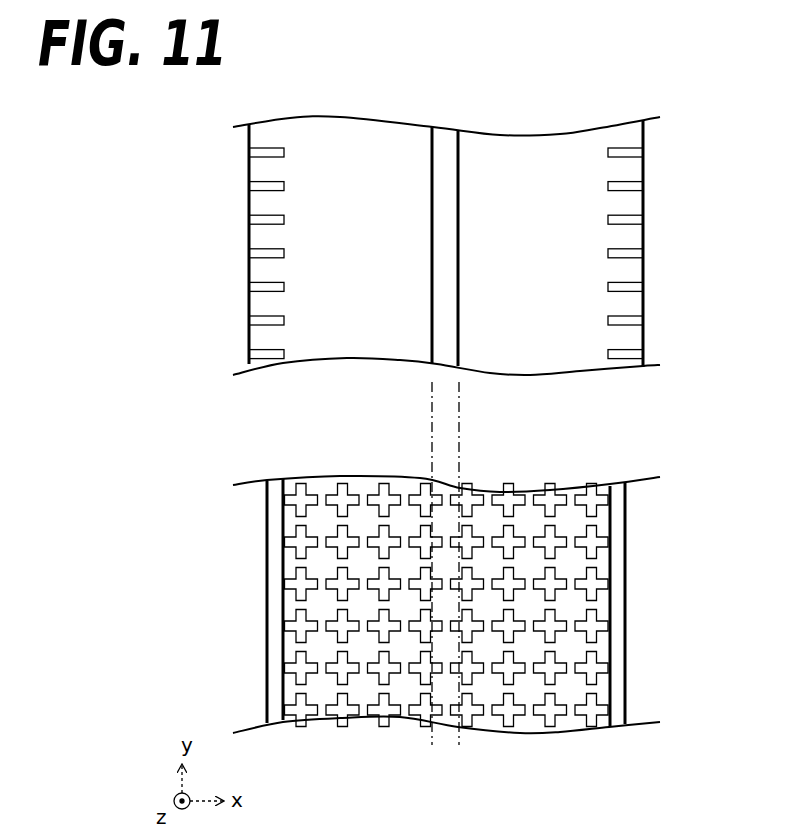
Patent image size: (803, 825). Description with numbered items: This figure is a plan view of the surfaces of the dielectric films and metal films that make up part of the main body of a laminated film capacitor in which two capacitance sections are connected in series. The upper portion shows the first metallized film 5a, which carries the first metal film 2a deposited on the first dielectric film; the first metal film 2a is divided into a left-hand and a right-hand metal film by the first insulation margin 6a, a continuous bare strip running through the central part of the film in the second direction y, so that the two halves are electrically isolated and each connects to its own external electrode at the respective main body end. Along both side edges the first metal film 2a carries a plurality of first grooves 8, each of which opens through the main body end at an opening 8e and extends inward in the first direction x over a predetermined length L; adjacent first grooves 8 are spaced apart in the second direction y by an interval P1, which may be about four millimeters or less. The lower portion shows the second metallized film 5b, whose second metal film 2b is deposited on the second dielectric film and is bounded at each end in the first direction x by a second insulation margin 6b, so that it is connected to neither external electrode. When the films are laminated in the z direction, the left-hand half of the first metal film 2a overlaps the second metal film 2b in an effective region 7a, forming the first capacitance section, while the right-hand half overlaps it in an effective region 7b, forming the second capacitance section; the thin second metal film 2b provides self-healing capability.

The first metallized film 5a is at (640, 97).
The first metal film 2a is at (368, 142).
The first insulation margin 6a is at (448, 147).
The first groove 8 is at (608, 220).
The opening 8e is at (614, 152).
The length L is at (292, 137).
The interval P1 is at (249, 214).
The second metallized film 5b is at (633, 458).
The second metal film 2b is at (357, 490).
The second insulation margin 6b is at (278, 653).
The effective region 7a is at (432, 743).
The effective region 7b is at (608, 743).